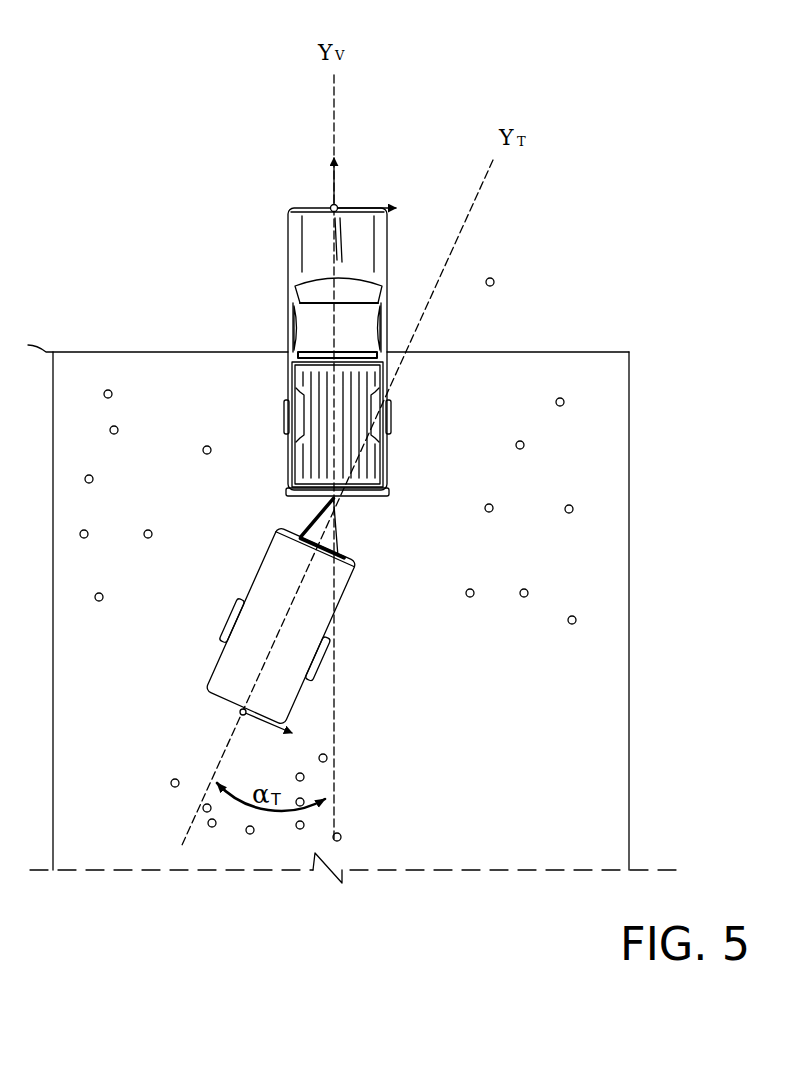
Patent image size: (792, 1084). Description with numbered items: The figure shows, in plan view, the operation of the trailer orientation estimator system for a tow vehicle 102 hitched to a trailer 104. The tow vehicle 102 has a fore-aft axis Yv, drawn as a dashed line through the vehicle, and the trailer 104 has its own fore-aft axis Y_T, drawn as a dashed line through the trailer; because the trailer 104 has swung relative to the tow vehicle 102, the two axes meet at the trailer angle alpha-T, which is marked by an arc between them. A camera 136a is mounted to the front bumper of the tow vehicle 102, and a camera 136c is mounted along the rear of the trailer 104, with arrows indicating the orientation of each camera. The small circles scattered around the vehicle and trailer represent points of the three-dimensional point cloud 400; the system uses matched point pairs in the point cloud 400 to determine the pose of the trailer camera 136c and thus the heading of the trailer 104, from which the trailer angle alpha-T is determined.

The tow vehicle 102 is at (298, 352).
The trailer 104 is at (273, 593).
The camera 136a is at (322, 207).
The camera 136c is at (243, 712).
The 3D point cloud 400 is at (596, 372).